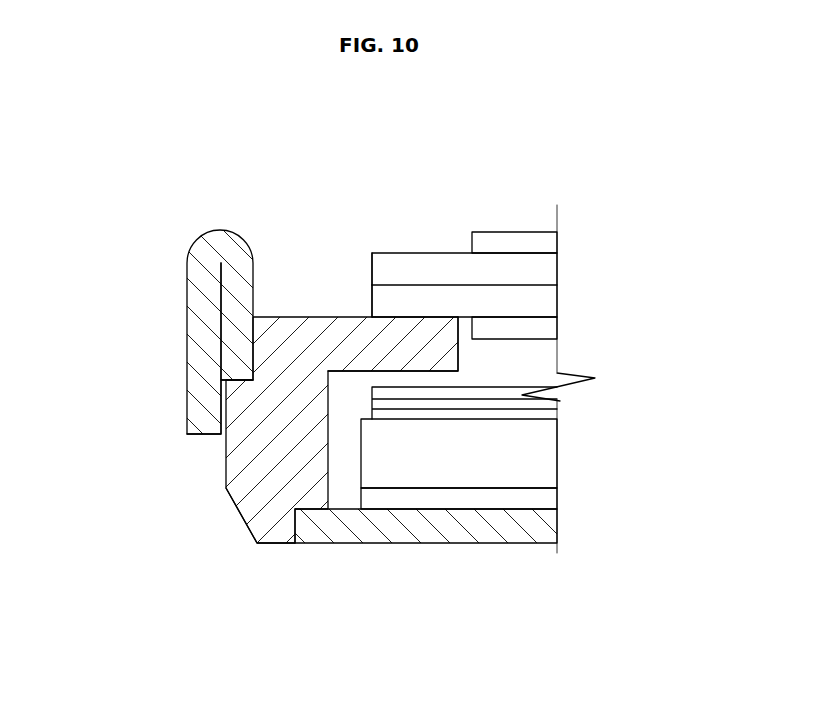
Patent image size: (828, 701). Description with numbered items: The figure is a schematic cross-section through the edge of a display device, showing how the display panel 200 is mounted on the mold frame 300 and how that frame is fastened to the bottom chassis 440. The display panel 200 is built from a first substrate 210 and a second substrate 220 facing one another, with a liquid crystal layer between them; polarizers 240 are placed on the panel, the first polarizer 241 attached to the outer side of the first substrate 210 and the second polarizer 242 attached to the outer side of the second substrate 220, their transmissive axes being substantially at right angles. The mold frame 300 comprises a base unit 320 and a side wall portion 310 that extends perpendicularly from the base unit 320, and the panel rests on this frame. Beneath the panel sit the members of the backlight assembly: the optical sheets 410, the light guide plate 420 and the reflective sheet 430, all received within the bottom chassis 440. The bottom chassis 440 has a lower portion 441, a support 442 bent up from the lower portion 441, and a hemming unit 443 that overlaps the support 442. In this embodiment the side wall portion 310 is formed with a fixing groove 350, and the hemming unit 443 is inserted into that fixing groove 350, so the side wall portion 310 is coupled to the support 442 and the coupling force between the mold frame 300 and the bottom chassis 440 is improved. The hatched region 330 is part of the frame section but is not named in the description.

The display panel 200 is at (535, 153).
The first substrate 210 is at (503, 303).
The second substrate 220 is at (457, 267).
The polarizers 240 is at (642, 243).
The first polarizer 241 is at (541, 328).
The second polarizer 242 is at (541, 243).
The mold frame 300 is at (423, 195).
The side wall portion 310 is at (305, 432).
The base unit 320 is at (420, 348).
The piston skirt portion 330 is at (278, 530).
The fixing groove 350 is at (235, 378).
The optical sheets 410 is at (405, 417).
The light guide plate 420 is at (545, 453).
The reflective sheet 430 is at (545, 497).
The bottom chassis 440 is at (107, 295).
The lower portion 441 is at (338, 532).
The support 442 is at (203, 375).
The hemming unit 443 is at (237, 297).